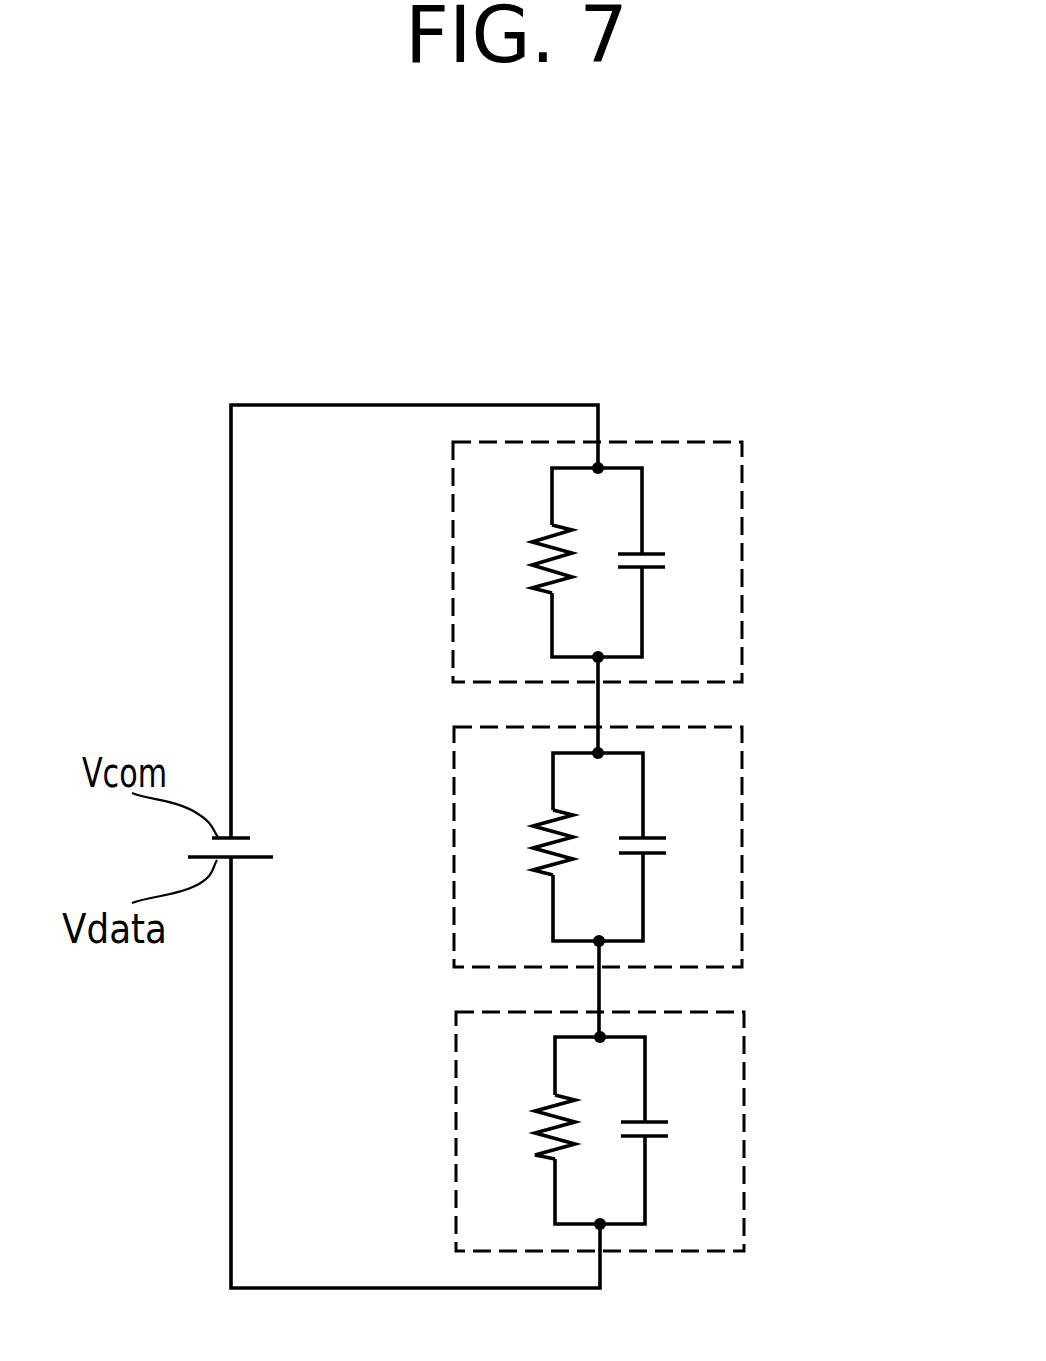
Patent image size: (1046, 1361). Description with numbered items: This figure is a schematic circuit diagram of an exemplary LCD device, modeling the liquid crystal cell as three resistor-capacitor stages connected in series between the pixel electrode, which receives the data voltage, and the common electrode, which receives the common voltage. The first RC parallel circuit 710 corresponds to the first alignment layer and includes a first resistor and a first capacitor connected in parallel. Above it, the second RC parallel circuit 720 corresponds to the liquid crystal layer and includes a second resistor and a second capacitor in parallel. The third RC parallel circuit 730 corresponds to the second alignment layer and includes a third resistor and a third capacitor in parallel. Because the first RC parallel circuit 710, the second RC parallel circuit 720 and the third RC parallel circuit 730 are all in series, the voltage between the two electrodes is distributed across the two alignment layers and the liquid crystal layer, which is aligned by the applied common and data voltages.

The first RC parallel circuit 710 is at (744, 1123).
The second RC parallel circuit 720 is at (742, 871).
The third RC parallel circuit 730 is at (742, 571).